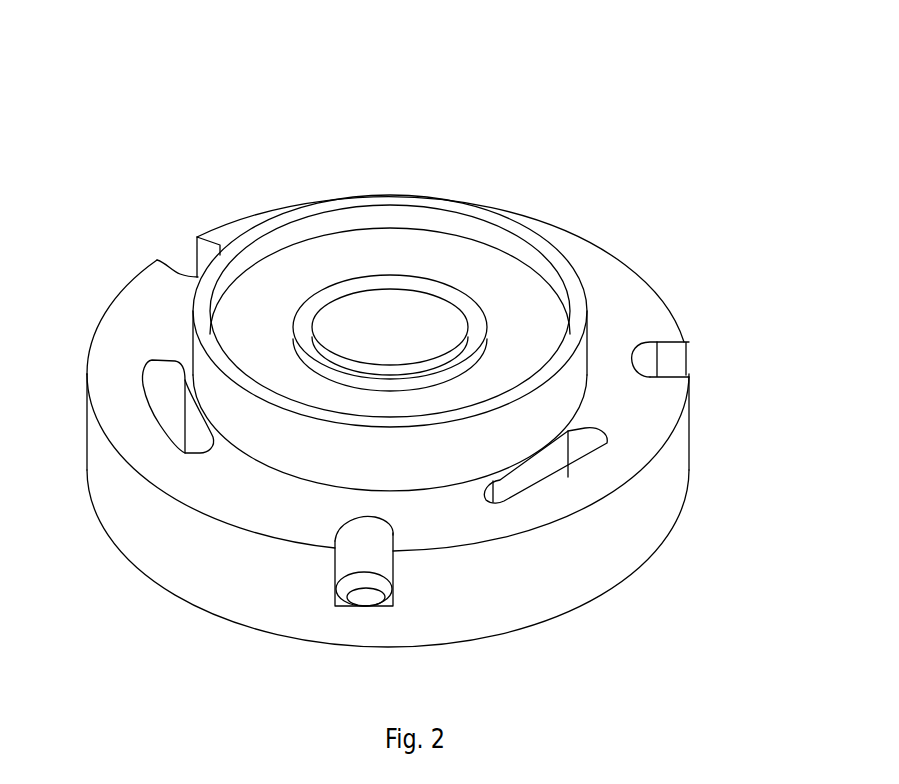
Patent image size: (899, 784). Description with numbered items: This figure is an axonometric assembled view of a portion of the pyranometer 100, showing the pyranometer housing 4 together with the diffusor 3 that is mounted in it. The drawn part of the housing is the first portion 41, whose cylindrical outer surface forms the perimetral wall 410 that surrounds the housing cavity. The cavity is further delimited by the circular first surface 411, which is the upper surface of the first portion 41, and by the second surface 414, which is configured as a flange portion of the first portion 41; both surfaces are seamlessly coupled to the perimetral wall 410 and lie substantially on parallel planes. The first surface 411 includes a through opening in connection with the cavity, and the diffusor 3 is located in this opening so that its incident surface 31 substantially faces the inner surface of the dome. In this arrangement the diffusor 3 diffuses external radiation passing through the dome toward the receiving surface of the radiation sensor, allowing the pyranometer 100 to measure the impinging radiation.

The pyranometer 100 is at (408, 334).
The pyranometer housing 4 is at (408, 352).
The first portion 41 is at (408, 414).
The perimetral wall 410 is at (577, 579).
The first surface 411 is at (508, 374).
The second surface 414 is at (618, 280).
The diffusor 3 is at (407, 251).
The incident surface 31 is at (410, 317).